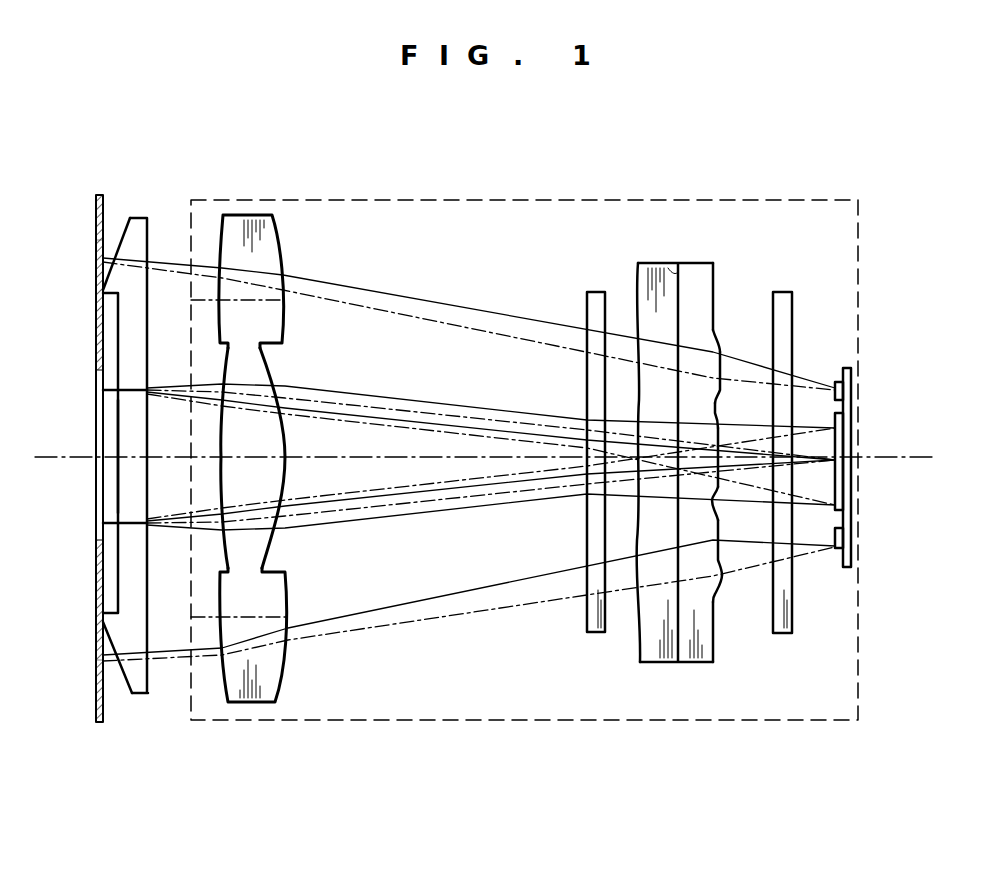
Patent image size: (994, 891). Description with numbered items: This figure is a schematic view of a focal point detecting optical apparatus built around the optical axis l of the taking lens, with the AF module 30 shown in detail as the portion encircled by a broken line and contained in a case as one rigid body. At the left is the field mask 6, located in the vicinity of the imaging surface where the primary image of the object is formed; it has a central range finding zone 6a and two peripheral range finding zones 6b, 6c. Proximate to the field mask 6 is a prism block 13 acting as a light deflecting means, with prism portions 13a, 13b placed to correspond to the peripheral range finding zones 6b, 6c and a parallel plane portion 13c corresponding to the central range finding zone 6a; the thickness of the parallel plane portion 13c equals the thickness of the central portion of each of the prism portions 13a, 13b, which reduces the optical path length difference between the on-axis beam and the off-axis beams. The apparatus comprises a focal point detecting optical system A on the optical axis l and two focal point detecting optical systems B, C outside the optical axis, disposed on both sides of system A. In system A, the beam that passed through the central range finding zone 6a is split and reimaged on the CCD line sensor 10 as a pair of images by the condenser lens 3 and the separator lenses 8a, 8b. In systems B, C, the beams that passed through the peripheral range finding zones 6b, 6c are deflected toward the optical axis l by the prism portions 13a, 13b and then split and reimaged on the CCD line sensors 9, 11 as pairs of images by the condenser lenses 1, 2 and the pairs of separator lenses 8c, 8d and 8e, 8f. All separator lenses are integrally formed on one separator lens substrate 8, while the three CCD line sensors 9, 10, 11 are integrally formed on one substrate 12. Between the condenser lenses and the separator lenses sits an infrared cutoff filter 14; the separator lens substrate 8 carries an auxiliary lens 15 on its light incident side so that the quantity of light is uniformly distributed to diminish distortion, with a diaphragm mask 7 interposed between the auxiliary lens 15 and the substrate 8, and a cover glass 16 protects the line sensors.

The condenser lens 1 is at (271, 226).
The condenser lens 2 is at (272, 677).
The condenser lens 3 is at (275, 430).
The field mask 6 is at (99, 196).
The central range finding zone 6a is at (96, 513).
The peripheral range finding zone 6b is at (96, 249).
The peripheral range finding zone 6c is at (96, 665).
The diaphragm mask 7 is at (668, 270).
The separator lens substrate 8 is at (694, 262).
The separator lens 8a is at (714, 420).
The separator lens 8b is at (707, 500).
The separator lens 8c is at (714, 359).
The separator lens 8d is at (717, 377).
The separator lens 8e is at (712, 563).
The separator lens 8f is at (717, 588).
The CCD line sensor 9 is at (851, 390).
The CCD line sensor 10 is at (851, 432).
The CCD line sensor 11 is at (851, 543).
The substrate 12 is at (852, 470).
The prism block 13 is at (146, 701).
The prism portion 13a is at (120, 240).
The prism portion 13b is at (124, 674).
The parallel plane portion 13c is at (127, 429).
The infrared cutoff filter 14 is at (597, 292).
The auxiliary lens 15 is at (650, 263).
The cover glass 16 is at (783, 292).
The AF module 30 is at (471, 197).
The focal point detecting optical system on an optical axis A is at (411, 542).
The focal point detecting optical system outside an optical axis B is at (383, 270).
The focal point detecting optical system outside an optical axis C is at (457, 630).
The optical axis l is at (62, 458).